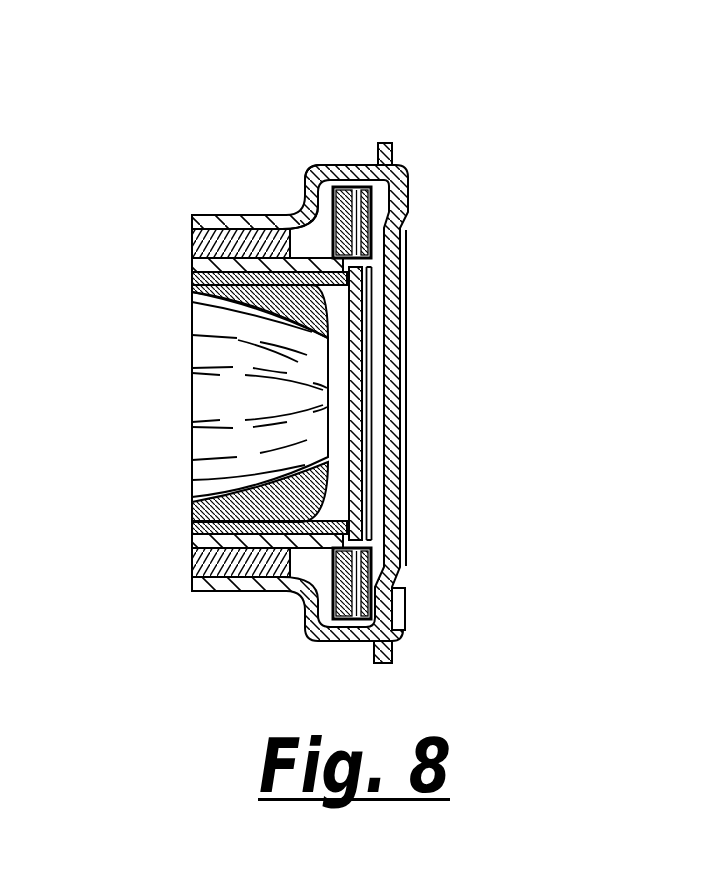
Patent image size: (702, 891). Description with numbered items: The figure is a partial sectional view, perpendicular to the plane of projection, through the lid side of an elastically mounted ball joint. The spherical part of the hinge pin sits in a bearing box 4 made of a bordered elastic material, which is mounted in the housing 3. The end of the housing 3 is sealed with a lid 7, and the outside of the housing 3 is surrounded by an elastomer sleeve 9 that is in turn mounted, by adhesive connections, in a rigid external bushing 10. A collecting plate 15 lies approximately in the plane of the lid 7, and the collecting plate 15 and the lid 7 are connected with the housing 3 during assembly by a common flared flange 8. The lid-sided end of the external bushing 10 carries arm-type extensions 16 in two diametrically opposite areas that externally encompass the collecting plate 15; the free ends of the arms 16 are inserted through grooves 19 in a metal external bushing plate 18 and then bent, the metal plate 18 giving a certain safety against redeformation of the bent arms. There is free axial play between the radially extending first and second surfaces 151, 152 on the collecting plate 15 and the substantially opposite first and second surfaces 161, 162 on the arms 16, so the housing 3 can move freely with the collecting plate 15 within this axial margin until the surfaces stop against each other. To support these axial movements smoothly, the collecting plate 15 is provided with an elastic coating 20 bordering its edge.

The housing 3 is at (192, 532).
The bearing box 4 is at (248, 298).
The lid 7 is at (365, 375).
The common flared flange 8 is at (370, 541).
The elastomer sleeve 9 is at (192, 238).
The external bushing 10 is at (230, 591).
The collecting plate 15 is at (357, 220).
The arm-type extensions 16 is at (386, 152).
The metal external bushing plate 18 is at (400, 312).
The grooves 19 is at (393, 645).
The coating 20 is at (322, 613).
The first radially extending surface 151 is at (313, 222).
The second radially extending surface 152 is at (372, 208).
The first radially extending surface 161 is at (316, 200).
The second radially extending surface 162 is at (365, 222).